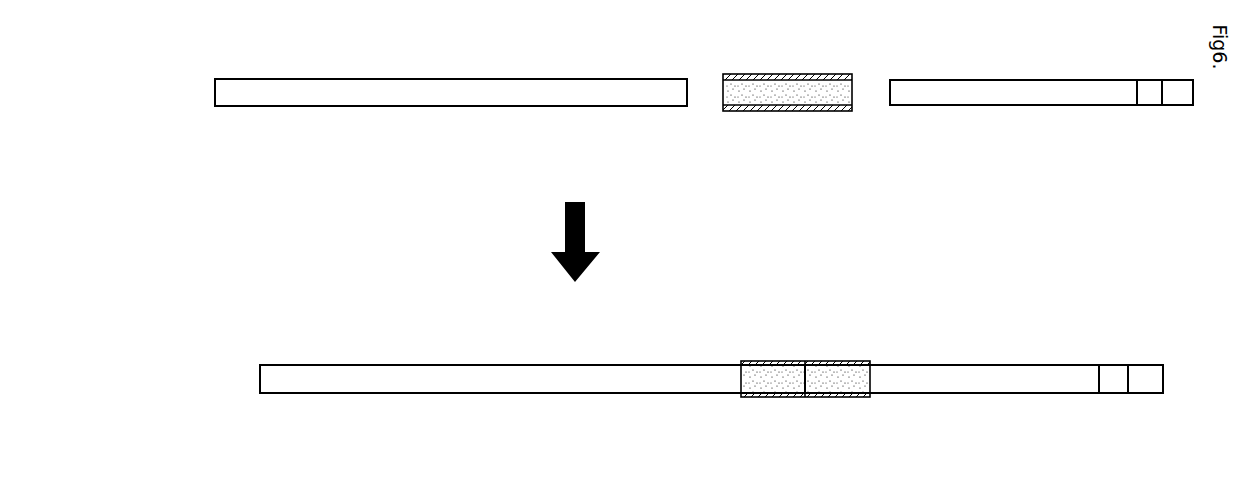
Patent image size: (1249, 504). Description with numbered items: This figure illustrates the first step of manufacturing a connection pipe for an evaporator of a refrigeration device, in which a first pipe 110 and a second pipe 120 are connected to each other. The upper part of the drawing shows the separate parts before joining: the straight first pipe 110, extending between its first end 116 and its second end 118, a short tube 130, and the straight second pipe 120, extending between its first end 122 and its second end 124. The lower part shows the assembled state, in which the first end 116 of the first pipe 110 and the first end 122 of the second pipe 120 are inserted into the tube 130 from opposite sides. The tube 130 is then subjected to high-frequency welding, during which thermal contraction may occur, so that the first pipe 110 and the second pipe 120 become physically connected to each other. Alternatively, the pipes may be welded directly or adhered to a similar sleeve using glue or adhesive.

The first pipe 110 is at (541, 79).
The first end of the first pipe 116 is at (663, 96).
The second end of the first pipe 118 is at (241, 101).
The second pipe 120 is at (1100, 80).
The first end of the second pipe 122 is at (899, 104).
The second end of the second pipe 124 is at (1115, 387).
The tube 130 is at (781, 74).